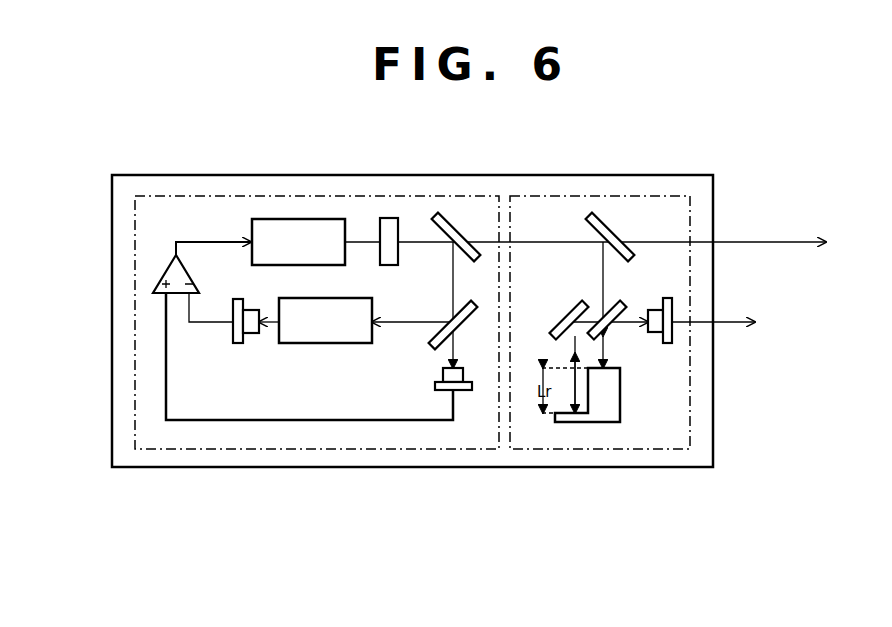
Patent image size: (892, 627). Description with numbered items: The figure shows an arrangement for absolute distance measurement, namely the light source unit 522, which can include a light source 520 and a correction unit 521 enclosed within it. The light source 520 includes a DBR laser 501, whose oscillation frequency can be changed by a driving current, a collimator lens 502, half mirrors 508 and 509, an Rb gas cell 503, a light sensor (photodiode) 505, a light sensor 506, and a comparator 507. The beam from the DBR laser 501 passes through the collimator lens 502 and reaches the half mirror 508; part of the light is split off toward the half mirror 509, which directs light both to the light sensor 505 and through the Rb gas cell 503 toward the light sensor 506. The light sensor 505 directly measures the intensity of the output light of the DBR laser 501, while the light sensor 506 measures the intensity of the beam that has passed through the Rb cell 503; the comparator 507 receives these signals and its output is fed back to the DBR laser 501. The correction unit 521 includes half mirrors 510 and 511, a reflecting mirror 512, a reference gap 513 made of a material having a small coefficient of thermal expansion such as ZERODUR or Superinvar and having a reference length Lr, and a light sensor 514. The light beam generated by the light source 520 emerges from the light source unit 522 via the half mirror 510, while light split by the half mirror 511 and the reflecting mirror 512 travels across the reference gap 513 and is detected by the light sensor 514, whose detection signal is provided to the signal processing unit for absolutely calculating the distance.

The DBR laser 501 is at (290, 226).
The collimator lens 502 is at (391, 225).
The Rb gas cell 503 is at (312, 343).
The light sensor (photodiode) 505 is at (442, 378).
The light sensor 506 is at (250, 333).
The comparator 507 is at (163, 275).
The half mirror 508 is at (455, 222).
The half mirror 509 is at (432, 330).
The half mirror 510 is at (605, 222).
The half mirror 511 is at (609, 306).
The reflecting mirror 512 is at (568, 312).
The reference gap 513 is at (586, 422).
The light sensor 514 is at (655, 333).
The light source 520 is at (181, 449).
The correction unit 521 is at (651, 449).
The light source unit 522 is at (265, 467).